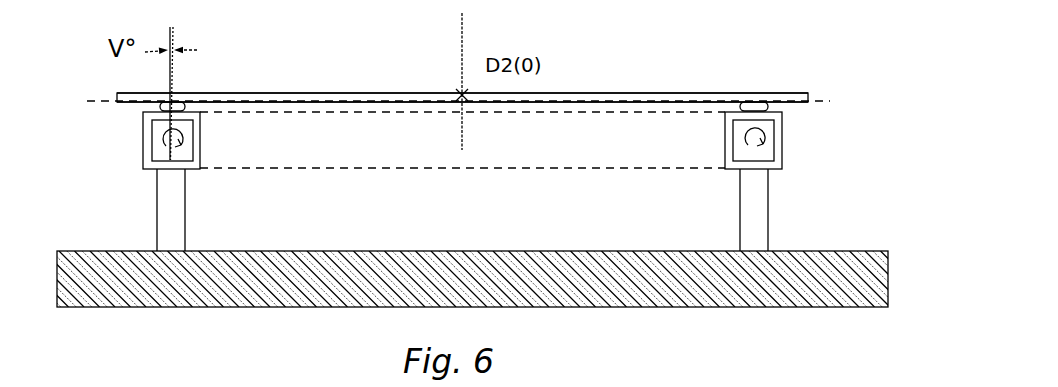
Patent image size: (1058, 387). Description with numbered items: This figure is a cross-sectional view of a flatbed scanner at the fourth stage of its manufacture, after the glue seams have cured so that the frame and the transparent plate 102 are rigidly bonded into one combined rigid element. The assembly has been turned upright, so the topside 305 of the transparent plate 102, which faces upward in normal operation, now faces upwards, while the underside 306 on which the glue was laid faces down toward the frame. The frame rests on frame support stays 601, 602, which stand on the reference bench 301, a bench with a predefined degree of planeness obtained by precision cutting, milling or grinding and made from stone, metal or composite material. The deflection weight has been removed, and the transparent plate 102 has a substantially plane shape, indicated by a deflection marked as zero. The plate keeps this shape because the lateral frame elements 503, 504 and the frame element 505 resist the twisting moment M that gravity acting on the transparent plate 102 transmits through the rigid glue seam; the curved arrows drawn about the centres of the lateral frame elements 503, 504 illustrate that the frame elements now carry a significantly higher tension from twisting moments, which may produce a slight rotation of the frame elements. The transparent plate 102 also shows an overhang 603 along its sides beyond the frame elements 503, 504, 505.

The transparent plate 102 is at (443, 92).
The topside 305 is at (641, 91).
The underside 306 is at (634, 107).
The frame element 505 is at (457, 166).
The overhang 603 is at (125, 115).
The lateral frame element 504 is at (147, 133).
The lateral frame element 503 is at (783, 140).
The twisting moment M is at (165, 142).
The left support post 602 is at (185, 187).
The frame support stay 601 is at (738, 183).
The reference bench 301 is at (175, 307).